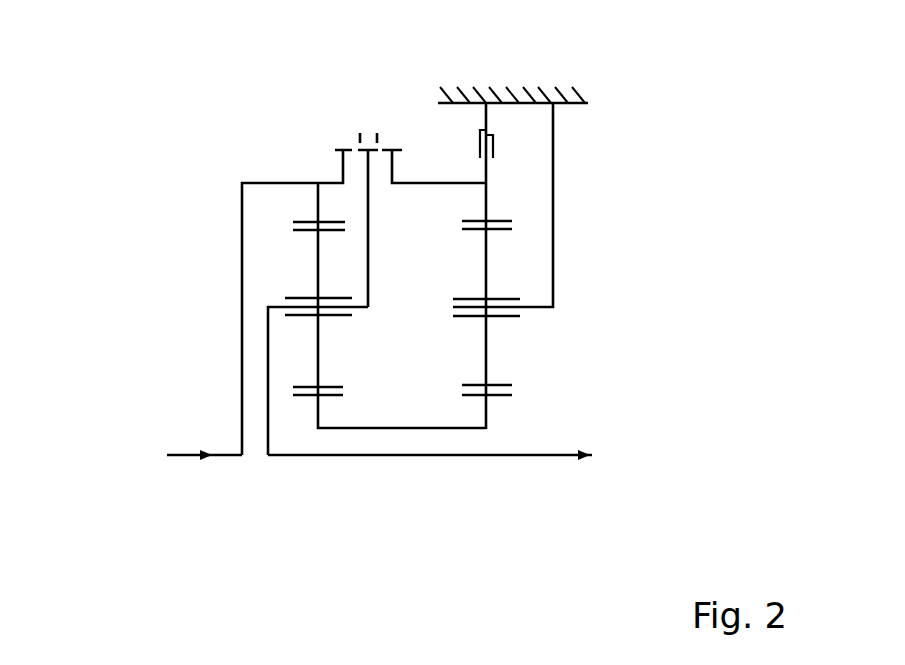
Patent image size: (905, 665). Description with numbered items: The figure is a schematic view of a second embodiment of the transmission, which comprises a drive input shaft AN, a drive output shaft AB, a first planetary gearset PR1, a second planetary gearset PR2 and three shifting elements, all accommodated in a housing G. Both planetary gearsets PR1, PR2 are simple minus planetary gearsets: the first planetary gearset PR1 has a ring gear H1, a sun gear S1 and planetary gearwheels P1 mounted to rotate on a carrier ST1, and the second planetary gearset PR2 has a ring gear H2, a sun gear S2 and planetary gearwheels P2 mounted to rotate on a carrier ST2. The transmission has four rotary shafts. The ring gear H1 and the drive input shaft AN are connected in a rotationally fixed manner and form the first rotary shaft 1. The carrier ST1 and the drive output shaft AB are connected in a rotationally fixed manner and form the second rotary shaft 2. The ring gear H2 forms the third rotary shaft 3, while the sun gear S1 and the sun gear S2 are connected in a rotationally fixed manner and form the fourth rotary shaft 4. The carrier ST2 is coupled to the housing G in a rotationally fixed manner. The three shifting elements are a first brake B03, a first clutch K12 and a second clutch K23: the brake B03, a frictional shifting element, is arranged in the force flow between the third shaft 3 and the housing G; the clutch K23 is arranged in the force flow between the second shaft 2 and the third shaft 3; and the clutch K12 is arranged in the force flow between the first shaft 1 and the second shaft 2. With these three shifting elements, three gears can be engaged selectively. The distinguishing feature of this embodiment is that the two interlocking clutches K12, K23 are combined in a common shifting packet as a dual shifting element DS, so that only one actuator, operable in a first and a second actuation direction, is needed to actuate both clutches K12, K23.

The first rotary shaft 1 is at (262, 183).
The second rotary shaft 2 is at (285, 455).
The third rotary shaft 3 is at (488, 172).
The fourth rotary shaft 4 is at (403, 433).
The drive input shaft AN is at (203, 442).
The drive output shaft AB is at (446, 442).
The dual shifting element DS is at (349, 76).
The first clutch K12 is at (354, 130).
The second clutch K23 is at (388, 125).
The housing G is at (526, 101).
The first brake B03 is at (504, 148).
The first planetary gearset PR1 is at (215, 419).
The second planetary gearset PR2 is at (605, 418).
The ring gear of the first planetary gearset H1 is at (293, 222).
The planetary gearwheels of the first planetary gearset P1 is at (318, 265).
The carrier of the first planetary gearset ST1 is at (282, 310).
The sun gear of the first planetary gearset S1 is at (335, 397).
The ring gear of the second planetary gearset H2 is at (512, 217).
The planetary gearwheels of the second planetary gearset P2 is at (490, 335).
The carrier of the second planetary gearset ST2 is at (520, 307).
The sun gear of the second planetary gearset S2 is at (500, 397).